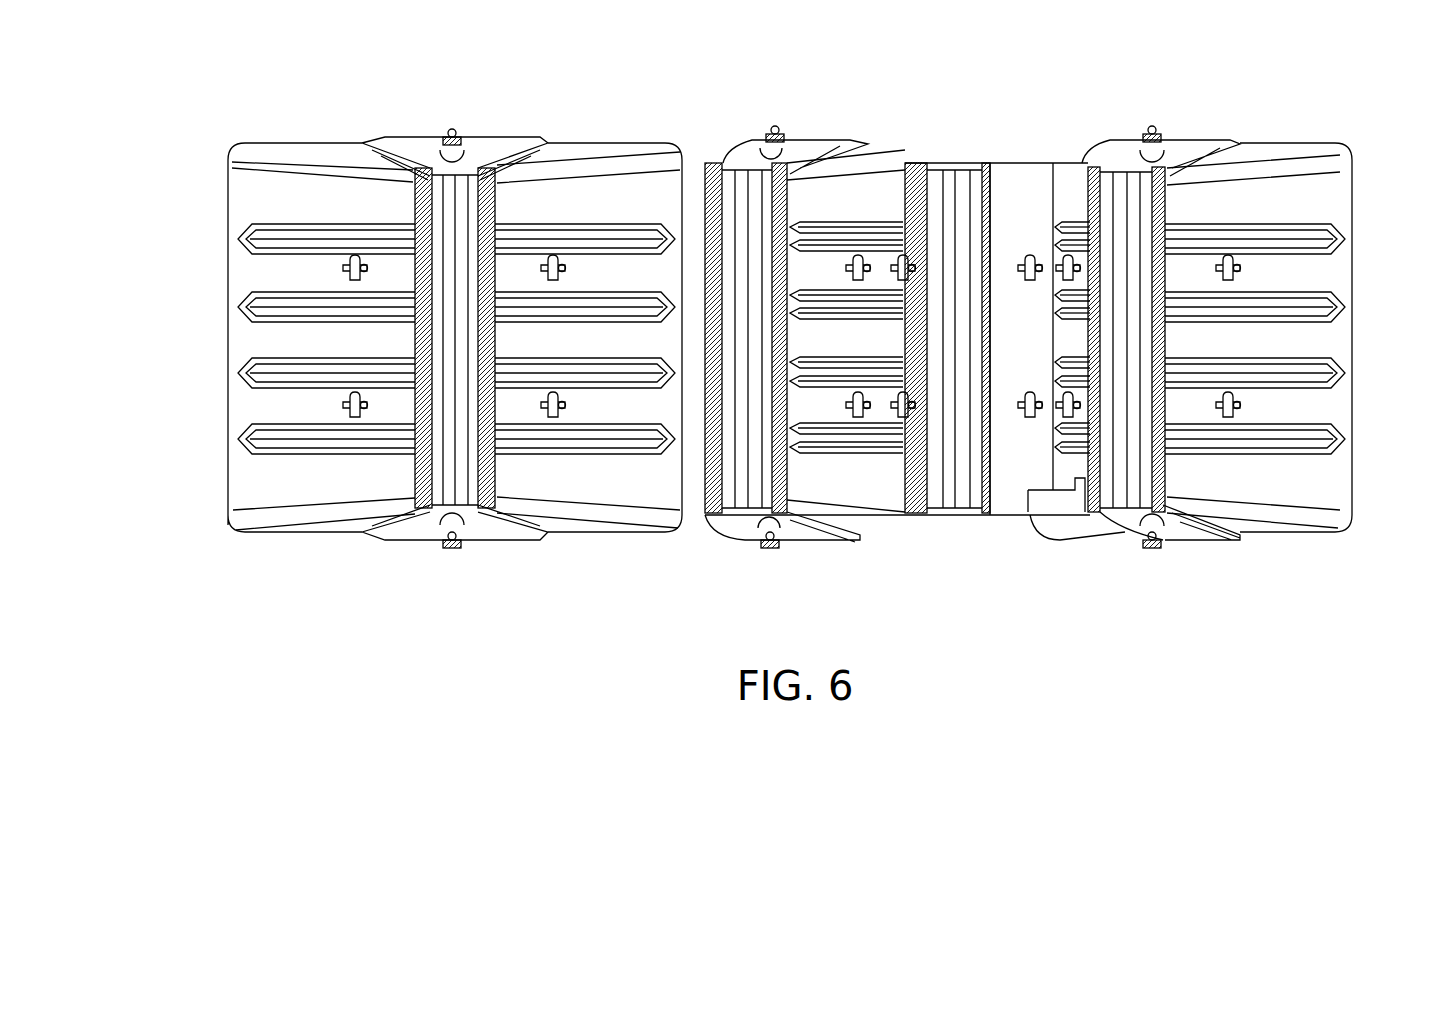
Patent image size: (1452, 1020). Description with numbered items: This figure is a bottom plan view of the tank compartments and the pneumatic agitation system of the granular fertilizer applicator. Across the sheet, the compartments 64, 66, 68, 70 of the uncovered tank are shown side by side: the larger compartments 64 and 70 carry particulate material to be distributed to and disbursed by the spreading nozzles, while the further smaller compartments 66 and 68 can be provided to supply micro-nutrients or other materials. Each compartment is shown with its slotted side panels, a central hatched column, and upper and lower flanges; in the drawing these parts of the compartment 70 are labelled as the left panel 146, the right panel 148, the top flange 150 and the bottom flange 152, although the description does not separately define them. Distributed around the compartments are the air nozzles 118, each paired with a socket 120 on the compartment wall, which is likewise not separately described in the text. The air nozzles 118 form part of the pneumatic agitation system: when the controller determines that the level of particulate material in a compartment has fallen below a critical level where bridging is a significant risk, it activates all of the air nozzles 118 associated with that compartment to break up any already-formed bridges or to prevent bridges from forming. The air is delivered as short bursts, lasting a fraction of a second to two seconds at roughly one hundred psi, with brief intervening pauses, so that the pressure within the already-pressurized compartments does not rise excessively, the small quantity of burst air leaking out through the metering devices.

The compartment 64 is at (1296, 132).
The compartment 66 is at (1004, 154).
The compartment 68 is at (727, 147).
The compartment 70 is at (288, 560).
The air nozzle 118 is at (445, 126).
The socket 120 is at (468, 150).
The left panel 146 is at (251, 483).
The right panel 148 is at (583, 490).
The top flange 150 is at (570, 152).
The bottom flange 152 is at (373, 532).